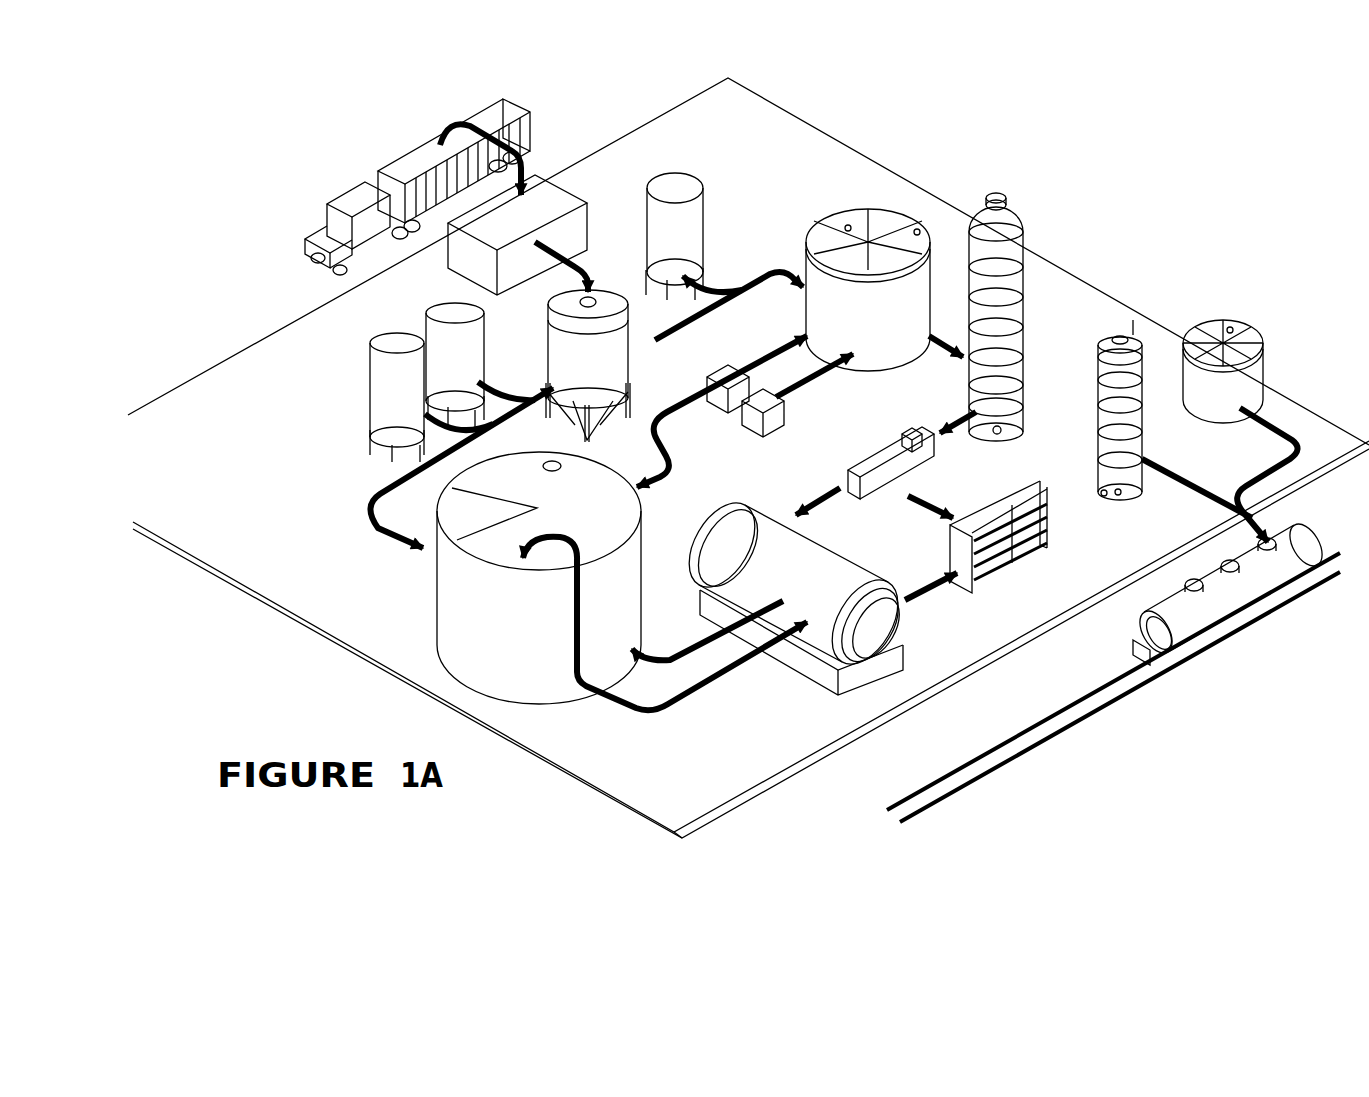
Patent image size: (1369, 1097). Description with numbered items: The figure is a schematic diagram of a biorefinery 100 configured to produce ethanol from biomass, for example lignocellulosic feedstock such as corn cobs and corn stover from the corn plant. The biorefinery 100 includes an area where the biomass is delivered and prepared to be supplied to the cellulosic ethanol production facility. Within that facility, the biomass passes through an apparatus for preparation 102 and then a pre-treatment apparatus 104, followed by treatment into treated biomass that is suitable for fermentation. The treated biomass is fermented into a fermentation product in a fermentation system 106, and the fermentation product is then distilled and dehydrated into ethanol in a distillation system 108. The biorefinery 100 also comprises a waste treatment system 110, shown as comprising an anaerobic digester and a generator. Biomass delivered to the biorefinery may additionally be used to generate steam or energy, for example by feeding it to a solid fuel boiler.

The biorefinery 100 is at (1100, 142).
The apparatus for preparation 102 is at (527, 235).
The pre-treatment apparatus 104 is at (588, 366).
The fermentation system 106 is at (868, 290).
The distillation system 108 is at (1055, 346).
The waste treatment system 110 is at (539, 578).